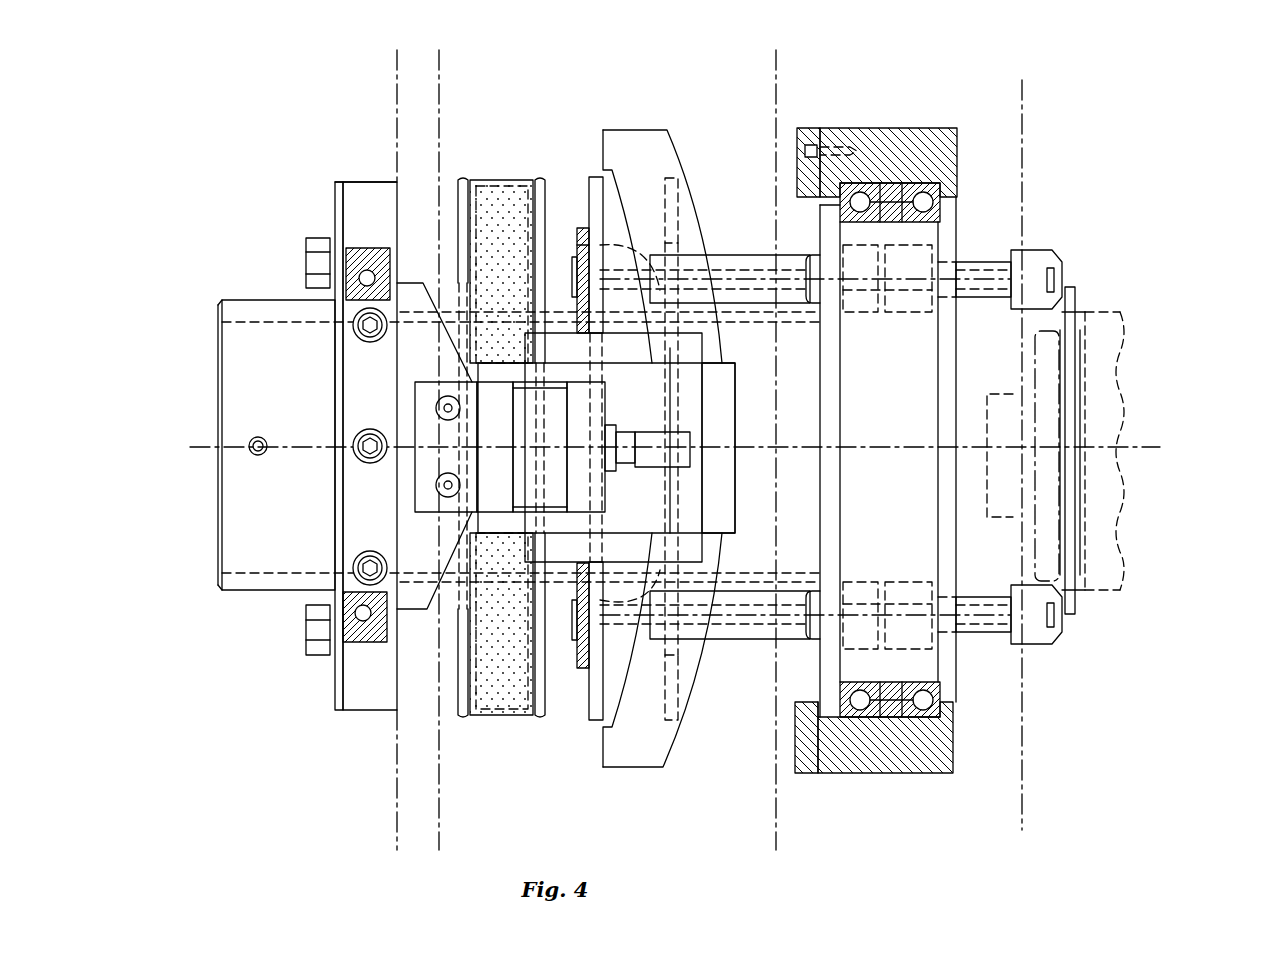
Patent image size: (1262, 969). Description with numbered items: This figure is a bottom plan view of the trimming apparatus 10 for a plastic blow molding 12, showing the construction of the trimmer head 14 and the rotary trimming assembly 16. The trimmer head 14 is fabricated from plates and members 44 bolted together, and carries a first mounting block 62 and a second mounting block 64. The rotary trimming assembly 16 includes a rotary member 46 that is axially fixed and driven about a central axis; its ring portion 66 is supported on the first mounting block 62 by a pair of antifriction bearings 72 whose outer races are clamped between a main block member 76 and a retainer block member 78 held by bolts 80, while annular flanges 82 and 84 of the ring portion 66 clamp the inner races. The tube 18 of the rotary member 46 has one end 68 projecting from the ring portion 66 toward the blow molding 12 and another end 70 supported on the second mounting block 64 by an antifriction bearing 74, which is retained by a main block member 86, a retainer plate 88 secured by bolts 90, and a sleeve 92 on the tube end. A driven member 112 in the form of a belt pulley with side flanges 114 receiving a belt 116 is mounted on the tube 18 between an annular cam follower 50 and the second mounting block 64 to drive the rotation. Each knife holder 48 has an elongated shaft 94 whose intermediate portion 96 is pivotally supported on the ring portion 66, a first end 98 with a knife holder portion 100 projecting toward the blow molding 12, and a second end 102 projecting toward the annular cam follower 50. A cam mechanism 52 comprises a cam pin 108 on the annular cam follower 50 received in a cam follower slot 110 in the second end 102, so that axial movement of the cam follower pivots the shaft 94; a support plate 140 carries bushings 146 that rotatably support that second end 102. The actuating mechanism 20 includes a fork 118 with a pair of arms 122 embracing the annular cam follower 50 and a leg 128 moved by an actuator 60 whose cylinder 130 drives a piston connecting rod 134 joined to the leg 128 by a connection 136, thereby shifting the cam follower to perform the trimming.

The apparatus 10 is at (962, 805).
The plastic blow molding 12 is at (1118, 310).
The trimmer head 14 is at (392, 792).
The rotary trimming assembly 16 is at (1118, 100).
The tube 18 is at (737, 587).
The actuating mechanism 20 is at (570, 548).
The plates and members 44 is at (392, 733).
The rotary member 46 is at (800, 318).
The knife holder 48 is at (965, 245).
The annular cam follower 50 is at (596, 176).
The cam mechanism 52 is at (640, 285).
The actuator 60 is at (466, 378).
The first mounting block 62 is at (897, 127).
The second mounting block 64 is at (370, 178).
The ring portion 66 is at (962, 398).
The one end of the tube 68 is at (1048, 592).
The another end of the tube 70 is at (420, 290).
The antifriction bearings 72 is at (870, 177).
The antifriction bearing 74 is at (362, 262).
The main block member 76 is at (937, 183).
The retainer block member 78 is at (800, 175).
The bolts 80 is at (810, 140).
The annular flange 82 is at (958, 240).
The annular flange 84 is at (833, 226).
The main block member 86 is at (369, 458).
The retainer plate 88 is at (340, 677).
The bolts 90 is at (318, 627).
The sleeve 92 is at (245, 298).
The elongated shaft 94 is at (967, 302).
The intermediate portion 96 is at (877, 300).
The first end 98 is at (1005, 258).
The knife holder portion 100 is at (1058, 252).
The second end 102 is at (737, 257).
The cam pin 108 is at (578, 262).
The cam follower slot 110 is at (717, 255).
The driven member 112 is at (462, 178).
The side flanges 114 is at (465, 720).
The belt 116 is at (492, 718).
The fork 118 is at (720, 342).
The arms 122 is at (640, 128).
The leg 128 is at (720, 475).
The cylinder 130 is at (500, 390).
The piston connecting rod 134 is at (647, 427).
The connection 136 is at (680, 437).
The support plate 140 is at (577, 245).
The bushings 146 is at (575, 280).